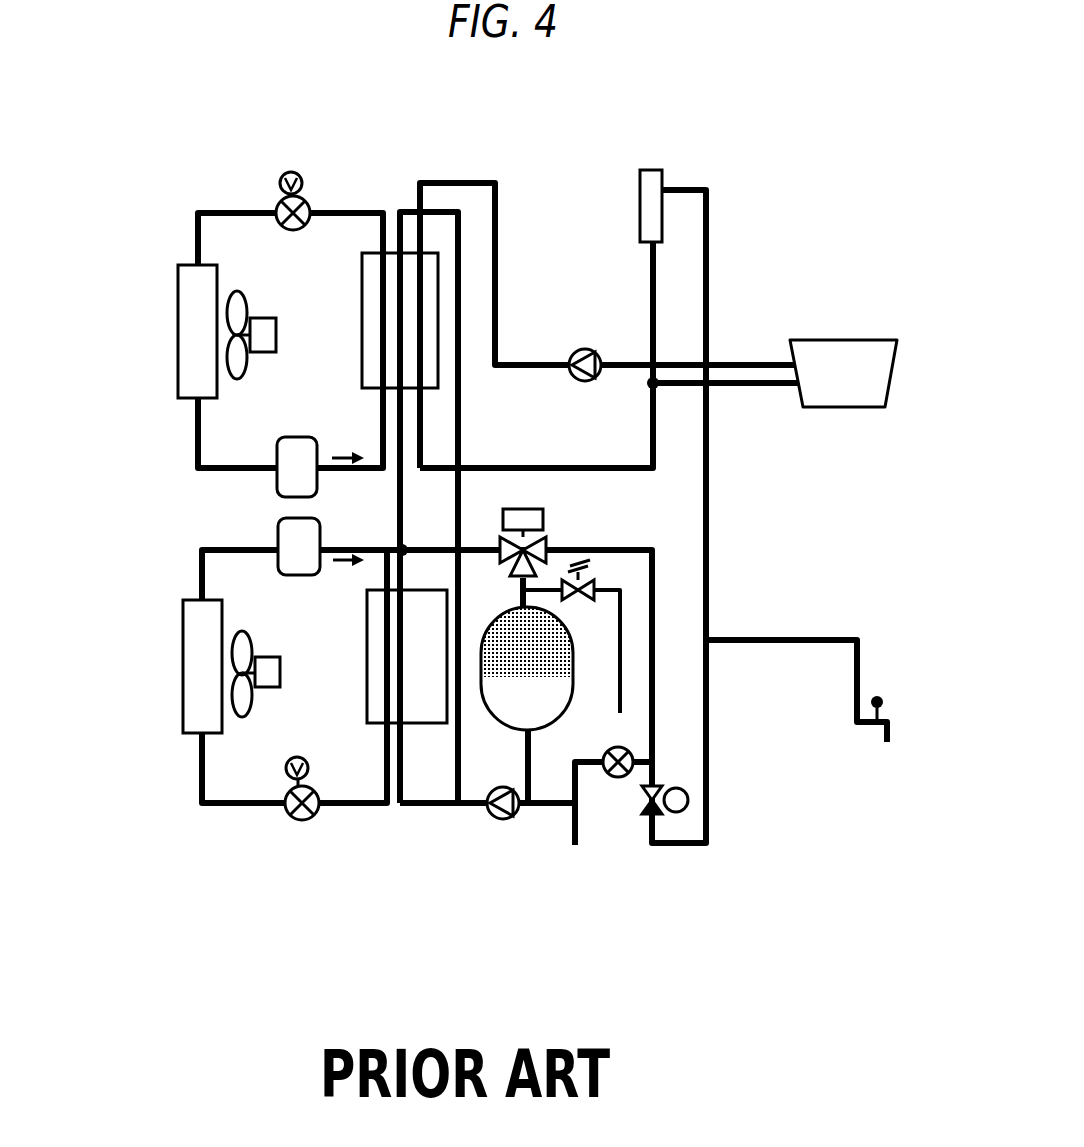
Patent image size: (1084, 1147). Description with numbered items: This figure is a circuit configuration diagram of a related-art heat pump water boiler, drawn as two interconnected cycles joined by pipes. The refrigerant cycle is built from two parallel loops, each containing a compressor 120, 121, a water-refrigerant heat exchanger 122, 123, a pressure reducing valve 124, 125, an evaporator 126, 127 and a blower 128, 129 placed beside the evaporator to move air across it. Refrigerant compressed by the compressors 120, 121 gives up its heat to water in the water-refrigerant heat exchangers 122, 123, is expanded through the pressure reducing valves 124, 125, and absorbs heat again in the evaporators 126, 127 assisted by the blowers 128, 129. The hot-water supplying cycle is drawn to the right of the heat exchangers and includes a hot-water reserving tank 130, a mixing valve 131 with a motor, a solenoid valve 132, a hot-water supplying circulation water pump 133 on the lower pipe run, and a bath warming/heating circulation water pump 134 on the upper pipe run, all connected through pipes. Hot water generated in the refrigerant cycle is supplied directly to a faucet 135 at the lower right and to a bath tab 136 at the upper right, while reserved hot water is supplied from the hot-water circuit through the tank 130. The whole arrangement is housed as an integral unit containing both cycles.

The compressor 120 is at (298, 570).
The compressor 121 is at (287, 478).
The water-refrigerant heat exchanger 122 is at (378, 680).
The water-refrigerant heat exchanger 123 is at (362, 258).
The pressure reducing valve 124 is at (302, 815).
The pressure reducing valve 125 is at (276, 200).
The evaporator 126 is at (195, 702).
The evaporator 127 is at (190, 375).
The blower 128 is at (242, 640).
The blower 129 is at (237, 313).
The hot-water reserving tank 130 is at (500, 675).
The mixing valve 131 is at (548, 540).
The solenoid valve 132 is at (652, 812).
The hot-water supplying circulation water pump 133 is at (510, 812).
The bath warming/heating circulation water pump 134 is at (585, 340).
The faucet 135 is at (880, 700).
The bath tab 136 is at (846, 340).